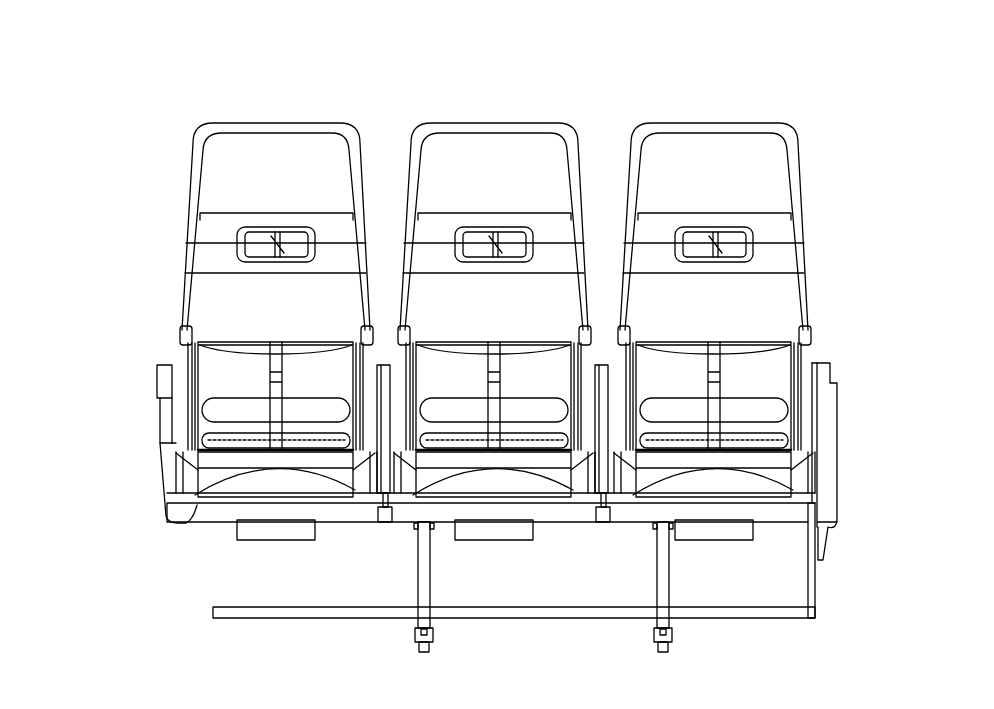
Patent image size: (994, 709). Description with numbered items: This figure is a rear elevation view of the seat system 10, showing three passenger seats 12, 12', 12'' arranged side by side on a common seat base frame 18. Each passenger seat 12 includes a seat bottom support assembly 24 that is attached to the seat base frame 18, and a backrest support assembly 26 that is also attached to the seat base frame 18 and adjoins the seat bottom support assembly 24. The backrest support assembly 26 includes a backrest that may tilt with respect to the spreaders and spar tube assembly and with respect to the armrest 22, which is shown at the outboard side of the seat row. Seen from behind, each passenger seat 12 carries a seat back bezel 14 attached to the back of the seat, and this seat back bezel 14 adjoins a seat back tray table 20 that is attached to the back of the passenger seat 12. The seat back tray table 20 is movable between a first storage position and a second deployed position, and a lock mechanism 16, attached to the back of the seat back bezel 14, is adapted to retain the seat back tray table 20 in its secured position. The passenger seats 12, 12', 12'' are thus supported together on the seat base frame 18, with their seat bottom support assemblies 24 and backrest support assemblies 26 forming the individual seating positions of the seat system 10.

The seat system 10 is at (143, 107).
The passenger seat 12 is at (217, 307).
The passenger seat 12' is at (494, 303).
The passenger seat 12'' is at (710, 302).
The seat back bezel 14 is at (187, 205).
The lock mechanism 16 is at (277, 247).
The seat base frame 18 is at (418, 637).
The seat back tray table 20 is at (257, 305).
The armrest 22 is at (820, 365).
The seat bottom support assembly 24 is at (188, 522).
The backrest support assembly 26 is at (215, 417).